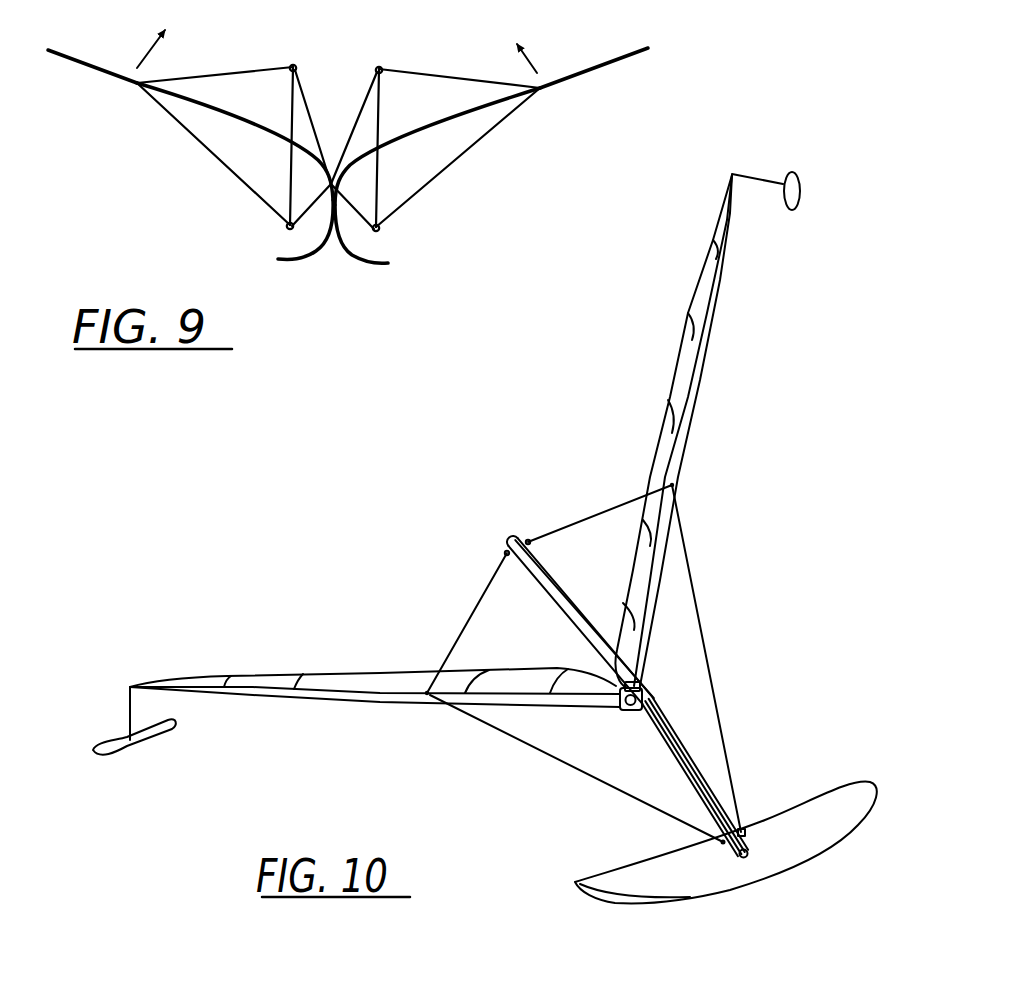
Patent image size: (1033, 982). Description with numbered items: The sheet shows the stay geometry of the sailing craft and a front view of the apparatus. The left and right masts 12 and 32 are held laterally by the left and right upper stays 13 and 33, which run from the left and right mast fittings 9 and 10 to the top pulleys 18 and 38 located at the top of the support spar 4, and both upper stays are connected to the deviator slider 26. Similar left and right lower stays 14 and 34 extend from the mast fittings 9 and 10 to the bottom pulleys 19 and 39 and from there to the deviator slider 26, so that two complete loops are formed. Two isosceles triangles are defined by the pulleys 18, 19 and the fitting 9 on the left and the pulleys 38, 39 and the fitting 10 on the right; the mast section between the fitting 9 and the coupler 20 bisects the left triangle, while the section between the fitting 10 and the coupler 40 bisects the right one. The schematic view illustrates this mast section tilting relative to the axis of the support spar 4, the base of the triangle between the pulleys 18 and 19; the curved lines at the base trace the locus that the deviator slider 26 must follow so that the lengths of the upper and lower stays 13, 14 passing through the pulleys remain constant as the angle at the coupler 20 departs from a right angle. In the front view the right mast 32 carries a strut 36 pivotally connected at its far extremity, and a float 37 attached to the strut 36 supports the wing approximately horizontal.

In FIG. 9, the support spar 4 is at (336, 147).
In FIG. 10, the support spar 4 is at (627, 697).
In FIG. 9, the left mast fitting 9 is at (200, 146).
In FIG. 10, the left mast fitting 9 is at (687, 487).
In FIG. 9, the right mast fitting 10 is at (483, 148).
In FIG. 10, the right mast fitting 10 is at (424, 714).
In FIG. 9, the left mast 12 is at (84, 52).
In FIG. 10, the left mast 12 is at (677, 431).
In FIG. 10, the left upper stay 13 is at (600, 513).
In FIG. 10, the left lower stay 14 is at (706, 658).
In FIG. 9, the top pulley 18 is at (316, 127).
In FIG. 10, the top pulley 18 is at (537, 519).
In FIG. 9, the bottom pulley 19 is at (265, 252).
In FIG. 10, the bottom pulley 19 is at (760, 806).
In FIG. 9, the coupler 20 is at (235, 141).
In FIG. 10, the coupler 20 is at (654, 674).
In FIG. 9, the deviator slider 26 is at (333, 172).
In FIG. 10, the deviator slider 26 is at (727, 786).
In FIG. 9, the right mast 32 is at (603, 52).
In FIG. 10, the right mast 32 is at (375, 701).
In FIG. 10, the right upper stay 33 is at (464, 623).
In FIG. 10, the right lower stay 34 is at (576, 768).
In FIG. 10, the right strut 36 is at (108, 713).
In FIG. 10, the right float 37 is at (134, 751).
In FIG. 9, the right top pulley 38 is at (354, 126).
In FIG. 10, the right top pulley 38 is at (481, 556).
In FIG. 9, the right bottom pulley 39 is at (403, 254).
In FIG. 10, the right bottom pulley 39 is at (687, 846).
In FIG. 9, the right coupler 40 is at (437, 146).
In FIG. 10, the right coupler 40 is at (620, 715).